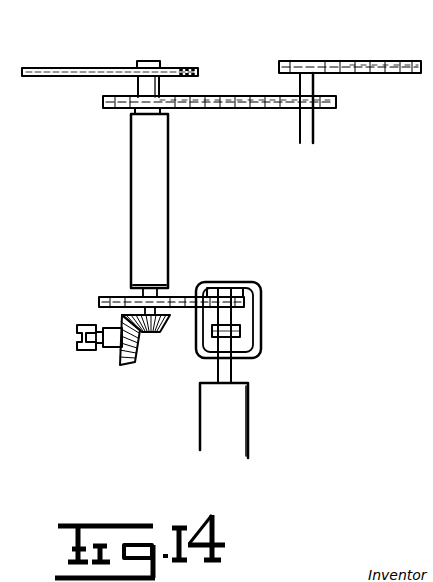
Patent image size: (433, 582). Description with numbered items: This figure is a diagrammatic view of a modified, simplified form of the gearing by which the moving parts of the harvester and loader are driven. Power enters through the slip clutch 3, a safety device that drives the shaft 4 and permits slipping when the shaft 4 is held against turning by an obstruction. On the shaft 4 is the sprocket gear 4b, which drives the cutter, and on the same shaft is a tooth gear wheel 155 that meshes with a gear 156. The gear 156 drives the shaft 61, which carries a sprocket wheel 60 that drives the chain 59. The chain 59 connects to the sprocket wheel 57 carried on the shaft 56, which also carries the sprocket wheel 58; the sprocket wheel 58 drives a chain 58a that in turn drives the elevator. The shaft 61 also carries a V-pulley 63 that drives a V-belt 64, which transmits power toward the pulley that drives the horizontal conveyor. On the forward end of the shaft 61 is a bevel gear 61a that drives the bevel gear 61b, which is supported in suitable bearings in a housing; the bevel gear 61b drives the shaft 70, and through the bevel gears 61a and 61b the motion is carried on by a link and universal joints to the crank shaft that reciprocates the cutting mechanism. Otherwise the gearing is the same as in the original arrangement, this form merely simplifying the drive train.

The V-belt 64 is at (78, 67).
The V-pulley 63 is at (182, 67).
The shaft 61 is at (147, 86).
The sprocket wheel 60 is at (112, 110).
The chain 59 is at (240, 111).
The sprocket wheel 58 is at (290, 61).
The chain 58a is at (366, 61).
The sprocket wheel 57 is at (335, 101).
The shaft 56 is at (313, 135).
The gear 156 is at (107, 297).
The tooth gear wheel 155 is at (247, 296).
The sprocket gear 4b is at (240, 332).
The shaft 4 is at (232, 372).
The slip clutch 3 is at (238, 441).
The bevel gear 61a is at (161, 334).
The bevel gear 61b is at (133, 360).
The shaft 70 is at (103, 352).